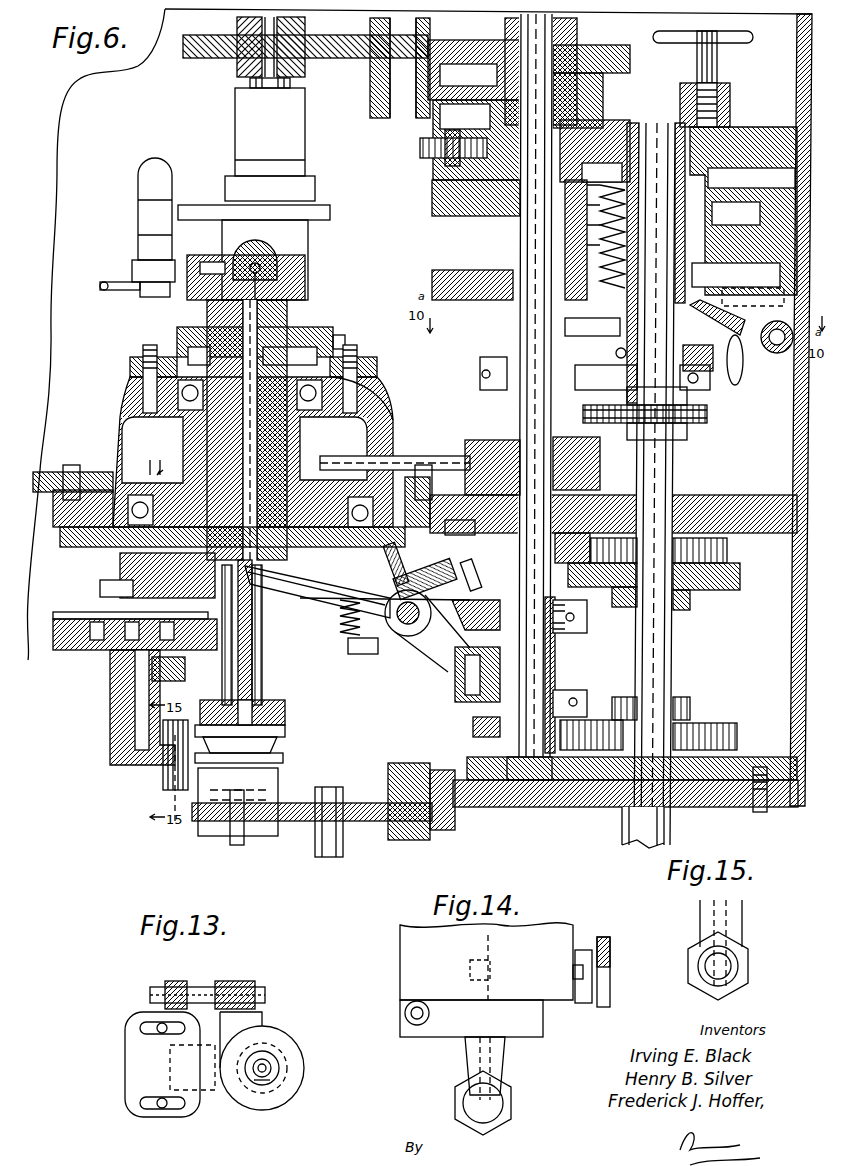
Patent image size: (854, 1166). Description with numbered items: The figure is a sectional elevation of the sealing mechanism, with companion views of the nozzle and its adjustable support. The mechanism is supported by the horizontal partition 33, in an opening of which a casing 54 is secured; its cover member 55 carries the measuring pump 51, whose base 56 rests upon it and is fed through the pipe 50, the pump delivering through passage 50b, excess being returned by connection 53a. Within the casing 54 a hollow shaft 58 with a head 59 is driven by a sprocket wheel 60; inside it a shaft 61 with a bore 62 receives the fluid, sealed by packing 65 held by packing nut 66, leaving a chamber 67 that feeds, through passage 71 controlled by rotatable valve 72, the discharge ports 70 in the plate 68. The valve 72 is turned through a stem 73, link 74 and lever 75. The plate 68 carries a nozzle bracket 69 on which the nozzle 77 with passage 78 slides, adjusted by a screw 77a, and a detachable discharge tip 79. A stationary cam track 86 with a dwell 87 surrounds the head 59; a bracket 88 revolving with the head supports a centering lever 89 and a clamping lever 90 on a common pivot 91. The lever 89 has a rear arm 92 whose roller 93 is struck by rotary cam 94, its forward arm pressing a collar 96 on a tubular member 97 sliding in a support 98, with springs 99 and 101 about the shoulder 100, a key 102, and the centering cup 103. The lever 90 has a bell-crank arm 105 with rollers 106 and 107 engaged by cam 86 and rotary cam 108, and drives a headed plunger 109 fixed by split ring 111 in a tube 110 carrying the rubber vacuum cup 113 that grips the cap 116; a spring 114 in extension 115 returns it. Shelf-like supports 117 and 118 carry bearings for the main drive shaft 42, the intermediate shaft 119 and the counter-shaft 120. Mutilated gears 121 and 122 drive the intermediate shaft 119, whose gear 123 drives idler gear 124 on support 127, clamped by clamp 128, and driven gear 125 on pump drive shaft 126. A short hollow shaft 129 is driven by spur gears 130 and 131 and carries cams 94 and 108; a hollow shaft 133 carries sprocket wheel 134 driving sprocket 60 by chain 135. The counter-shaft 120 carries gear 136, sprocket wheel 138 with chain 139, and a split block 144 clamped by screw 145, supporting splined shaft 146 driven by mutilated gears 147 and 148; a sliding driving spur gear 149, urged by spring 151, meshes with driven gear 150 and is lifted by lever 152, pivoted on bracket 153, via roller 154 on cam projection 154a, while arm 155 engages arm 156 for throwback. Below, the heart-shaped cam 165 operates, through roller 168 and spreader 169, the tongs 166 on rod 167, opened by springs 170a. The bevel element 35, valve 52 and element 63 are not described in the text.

In FIG. 6, the horizontal partition 33 is at (55, 470).
In FIG. 6, the bevel gear 35 is at (420, 148).
In FIG. 6, the main drive shaft 42 is at (622, 826).
In FIG. 6, the pipe 50 is at (306, 430).
In FIG. 6, the delivery passage 50b is at (270, 262).
In FIG. 6, the measuring pump 51 is at (236, 118).
In FIG. 6, the valve 52 is at (138, 238).
In FIG. 6, the connection 53a is at (110, 291).
In FIG. 6, the casing 54 is at (390, 428).
In FIG. 6, the cover member 55 is at (312, 312).
In FIG. 6, the base 56 is at (222, 256).
In FIG. 6, the hollow shaft 58 is at (192, 468).
In FIG. 6, the head 59 is at (150, 556).
In FIG. 6, the sprocket wheel 60 is at (152, 450).
In FIG. 6, the shaft 61 is at (345, 340).
In FIG. 6, the bore 62 is at (340, 330).
In FIG. 6, the pin 63 is at (280, 283).
In FIG. 6, the packing 65 is at (333, 448).
In FIG. 6, the packing nut 66 is at (385, 582).
In FIG. 6, the chamber 67 is at (316, 588).
In FIG. 6, the plate 68 is at (352, 609).
In FIG. 6, the nozzle bracket 69 is at (53, 614).
In FIG. 6, the discharge ports 70 is at (85, 650).
In FIG. 6, the passage 71 is at (116, 580).
In FIG. 14, the passage 71 is at (480, 940).
In FIG. 6, the rotatable valve 72 is at (119, 586).
In FIG. 14, the rotatable valve 72 is at (498, 955).
In FIG. 14, the stem 73 is at (578, 1003).
In FIG. 14, the link 74 is at (583, 950).
In FIG. 14, the lever 75 is at (610, 958).
In FIG. 6, the nozzle 77 is at (112, 725).
In FIG. 13, the nozzle 77 is at (125, 1030).
In FIG. 14, the nozzle 77 is at (503, 1058).
In FIG. 15, the nozzle 77 is at (743, 927).
In FIG. 6, the screw 77a is at (168, 676).
In FIG. 13, the screw 77a is at (200, 990).
In FIG. 14, the screw 77a is at (405, 1013).
In FIG. 6, the passage 78 is at (135, 700).
In FIG. 13, the passage 78 is at (140, 1062).
In FIG. 14, the passage 78 is at (492, 1068).
In FIG. 15, the passage 78 is at (712, 917).
In FIG. 6, the discharge tip 79 is at (175, 790).
In FIG. 13, the discharge tip 79 is at (205, 1092).
In FIG. 14, the discharge tip 79 is at (456, 1095).
In FIG. 15, the discharge tip 79 is at (738, 968).
In FIG. 6, the stationary cam track 86 is at (68, 543).
In FIG. 6, the dwell 87 is at (391, 564).
In FIG. 6, the bracket 88 is at (378, 648).
In FIG. 6, the lever 89 is at (392, 670).
In FIG. 6, the clamping lever 90 is at (322, 588).
In FIG. 6, the common pivot 91 is at (408, 636).
In FIG. 6, the rear arm 92 is at (425, 675).
In FIG. 6, the roller 93 is at (477, 674).
In FIG. 6, the rotary cam 94 is at (481, 678).
In FIG. 6, the collar 96 is at (225, 635).
In FIG. 6, the tubular member 97 is at (268, 689).
In FIG. 13, the tubular member 97 is at (270, 1072).
In FIG. 6, the support 98 is at (270, 676).
In FIG. 13, the support 98 is at (304, 1066).
In FIG. 6, the spring 99 is at (260, 628).
In FIG. 6, the enlarged shoulder 100 is at (252, 634).
In FIG. 13, the enlarged shoulder 100 is at (278, 1062).
In FIG. 6, the spring 101 is at (262, 645).
In FIG. 13, the spring 101 is at (280, 1052).
In FIG. 6, the key 102 is at (222, 700).
In FIG. 6, the container closure centering cup 103 is at (285, 712).
In FIG. 6, the rear bell-crank arm 105 is at (443, 555).
In FIG. 6, the roller 106 is at (425, 578).
In FIG. 6, the roller 107 is at (480, 572).
In FIG. 6, the rotary cam 108 is at (475, 630).
In FIG. 6, the headed plunger 109 is at (252, 592).
In FIG. 6, the tube 110 is at (272, 700).
In FIG. 13, the tube 110 is at (262, 1080).
In FIG. 6, the split ring 111 is at (258, 610).
In FIG. 6, the rubber vacuum cup 113 is at (277, 742).
In FIG. 6, the spring 114 is at (352, 652).
In FIG. 6, the extension 115 is at (368, 670).
In FIG. 6, the cap 116 is at (283, 758).
In FIG. 6, the shelf-like support 117 is at (765, 152).
In FIG. 6, the shelf-like support 118 is at (745, 772).
In FIG. 6, the intermediate shaft 119 is at (560, 33).
In FIG. 6, the counter-shaft 120 is at (688, 660).
In FIG. 6, the driving gear 121 is at (718, 735).
In FIG. 6, the gear 122 is at (473, 728).
In FIG. 6, the gear 123 is at (450, 45).
In FIG. 6, the idler gear 124 is at (474, 70).
In FIG. 6, the driven gear 125 is at (200, 60).
In FIG. 6, the drive shaft 126 is at (290, 82).
In FIG. 6, the support 127 is at (476, 140).
In FIG. 6, the clamp 128 is at (718, 86).
In FIG. 6, the short hollow shaft 129 is at (556, 655).
In FIG. 6, the driving spur gear 130 is at (722, 549).
In FIG. 6, the driven spur gear 131 is at (460, 527).
In FIG. 6, the hollow shaft 133 is at (520, 335).
In FIG. 6, the sprocket wheel 134 is at (480, 440).
In FIG. 6, the sprocket chain 135 is at (432, 458).
In FIG. 6, the gear 136 is at (728, 592).
In FIG. 6, the sprocket wheel 138 is at (700, 424).
In FIG. 6, the sprocket chain 139 is at (610, 424).
In FIG. 6, the split block 144 is at (592, 329).
In FIG. 6, the screw 145 is at (616, 353).
In FIG. 6, the hollow splined shaft 146 is at (619, 240).
In FIG. 6, the gear 147 is at (432, 198).
In FIG. 6, the gear 148 is at (751, 178).
In FIG. 6, the driving spur gear 149 is at (736, 275).
In FIG. 6, the driven gear 150 is at (440, 257).
In FIG. 6, the spring 151 is at (715, 239).
In FIG. 6, the lever 152 is at (741, 320).
In FIG. 6, the bracket 153 is at (760, 372).
In FIG. 6, the roller 154 is at (735, 385).
In FIG. 6, the cam projection 154a is at (757, 401).
In FIG. 6, the arm 155 is at (642, 377).
In FIG. 6, the arm 156 is at (480, 375).
In FIG. 6, the heart-shaped cam 165 is at (755, 810).
In FIG. 6, the tongs 166 is at (330, 790).
In FIG. 6, the rod 167 is at (345, 855).
In FIG. 6, the roller 168 is at (415, 770).
In FIG. 6, the spreader 169 is at (455, 812).
In FIG. 6, the springs 170a is at (300, 840).